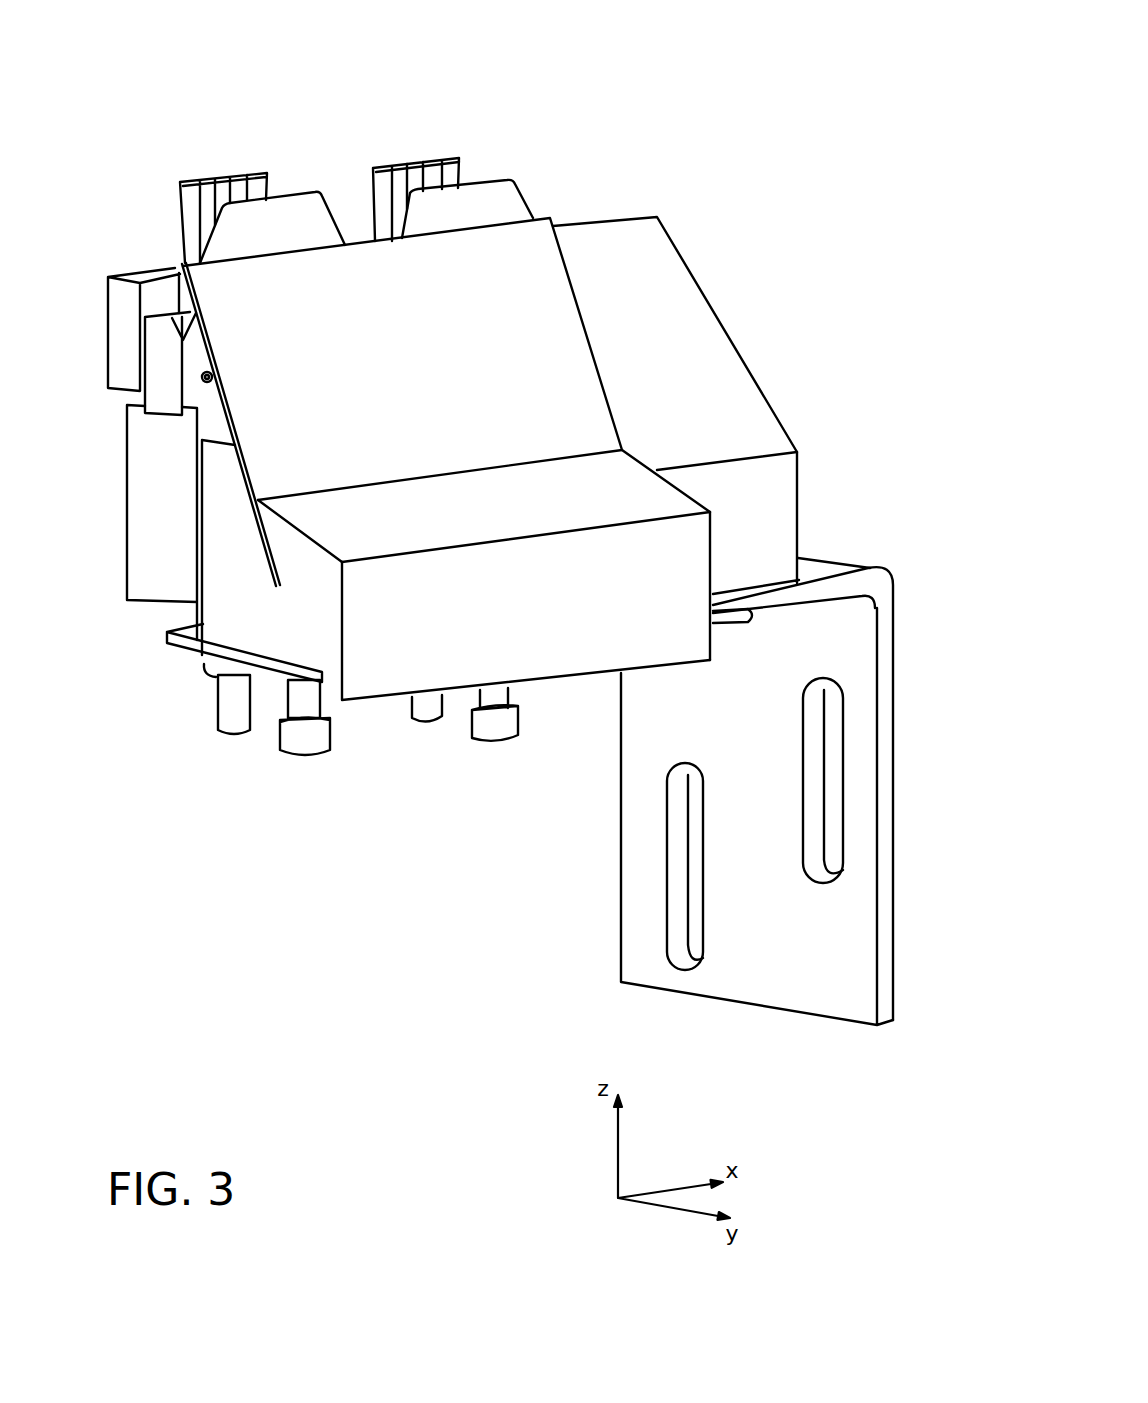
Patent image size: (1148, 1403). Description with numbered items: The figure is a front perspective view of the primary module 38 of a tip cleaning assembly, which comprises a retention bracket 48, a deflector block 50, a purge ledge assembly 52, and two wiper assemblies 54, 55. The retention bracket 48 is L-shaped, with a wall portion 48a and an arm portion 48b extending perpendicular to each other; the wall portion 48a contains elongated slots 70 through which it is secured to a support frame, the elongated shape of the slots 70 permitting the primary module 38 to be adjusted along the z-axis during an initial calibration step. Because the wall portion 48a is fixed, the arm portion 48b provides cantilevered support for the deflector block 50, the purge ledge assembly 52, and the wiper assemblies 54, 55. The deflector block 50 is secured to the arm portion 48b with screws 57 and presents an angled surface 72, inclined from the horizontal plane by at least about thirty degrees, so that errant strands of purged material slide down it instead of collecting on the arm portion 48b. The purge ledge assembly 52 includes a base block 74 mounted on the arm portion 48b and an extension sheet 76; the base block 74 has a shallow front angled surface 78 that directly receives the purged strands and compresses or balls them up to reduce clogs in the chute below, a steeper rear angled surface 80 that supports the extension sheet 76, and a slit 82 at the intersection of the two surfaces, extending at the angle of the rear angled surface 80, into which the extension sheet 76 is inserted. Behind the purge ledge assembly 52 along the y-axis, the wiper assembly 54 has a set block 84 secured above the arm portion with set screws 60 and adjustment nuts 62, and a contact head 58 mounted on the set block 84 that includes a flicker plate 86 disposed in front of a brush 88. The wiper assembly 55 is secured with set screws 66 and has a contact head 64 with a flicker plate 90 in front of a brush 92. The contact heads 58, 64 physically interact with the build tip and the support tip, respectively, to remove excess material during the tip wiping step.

The primary module 38 is at (386, 913).
The retention bracket 48 is at (892, 569).
The wall portion 48a is at (755, 965).
The arm portion 48b is at (813, 568).
The deflector block 50 is at (752, 356).
The purge ledge assembly 52 is at (364, 731).
The wiper assembly 54 is at (302, 58).
The wiper assembly 55 is at (496, 31).
The screws 57 is at (728, 622).
The contact head 58 is at (158, 232).
The set screws 60 is at (290, 740).
The adjustment nuts 62 is at (212, 676).
The contact head 64 is at (471, 166).
The set screws 66 is at (450, 730).
The slots 70 is at (808, 737).
The angled surface 72 is at (670, 285).
The base block 74 is at (562, 650).
The extension sheet 76 is at (537, 262).
The front angled surface 78 is at (353, 522).
The rear angled surface 80 is at (247, 482).
The slit 82 is at (256, 566).
The set block 84 is at (145, 470).
The flicker plate 86 is at (292, 212).
The brush 88 is at (210, 176).
The flicker plate 90 is at (515, 195).
The brush 92 is at (400, 173).